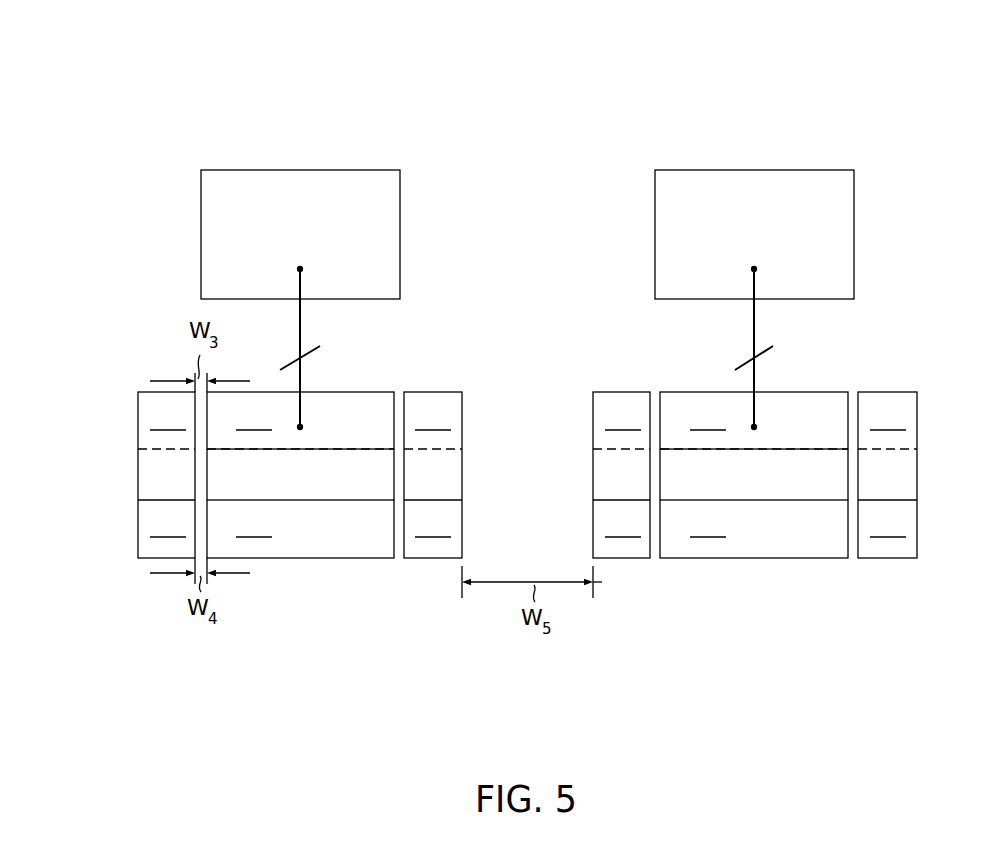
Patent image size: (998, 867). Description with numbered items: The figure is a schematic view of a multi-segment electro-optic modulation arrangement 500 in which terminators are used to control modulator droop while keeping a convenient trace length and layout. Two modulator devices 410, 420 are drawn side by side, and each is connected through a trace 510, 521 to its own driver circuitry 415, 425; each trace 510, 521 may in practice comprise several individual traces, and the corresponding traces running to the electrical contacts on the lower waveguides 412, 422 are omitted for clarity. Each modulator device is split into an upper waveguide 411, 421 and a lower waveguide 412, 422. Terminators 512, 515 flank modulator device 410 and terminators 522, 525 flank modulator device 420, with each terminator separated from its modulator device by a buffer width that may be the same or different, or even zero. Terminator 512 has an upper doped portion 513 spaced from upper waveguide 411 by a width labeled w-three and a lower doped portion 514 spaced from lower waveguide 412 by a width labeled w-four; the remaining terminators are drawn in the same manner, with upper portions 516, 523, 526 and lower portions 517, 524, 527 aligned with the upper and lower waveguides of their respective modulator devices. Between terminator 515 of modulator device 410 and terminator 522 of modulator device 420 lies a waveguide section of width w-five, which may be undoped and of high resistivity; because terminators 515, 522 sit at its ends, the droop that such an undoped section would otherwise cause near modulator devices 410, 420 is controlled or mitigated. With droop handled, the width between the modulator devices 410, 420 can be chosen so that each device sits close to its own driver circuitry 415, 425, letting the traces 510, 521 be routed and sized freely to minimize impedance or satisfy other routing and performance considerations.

The arrangement 500 is at (889, 80).
The driver circuitry 415 is at (318, 187).
The driver circuitry 425 is at (771, 187).
The trace 510 is at (302, 320).
The trace 521 is at (756, 320).
The modulator device 410 is at (300, 479).
The modulator device 420 is at (754, 480).
The upper waveguide 411 is at (300, 420).
The lower waveguide 412 is at (300, 529).
The upper waveguide 421 is at (754, 420).
The lower waveguide 422 is at (754, 529).
The terminator 512 is at (140, 445).
The upper doped portion 513 is at (168, 417).
The lower doped portion 514 is at (168, 524).
The terminator 515 is at (460, 445).
The third edge sub-pixel 516 is at (433, 417).
The fourth edge sub-pixel 517 is at (433, 524).
The terminator 522 is at (594, 445).
The fifth edge sub-pixel 523 is at (623, 417).
The sixth edge sub-pixel 524 is at (623, 524).
The terminator 525 is at (914, 446).
The seventh edge sub-pixel 526 is at (888, 417).
The eighth edge sub-pixel 527 is at (888, 524).